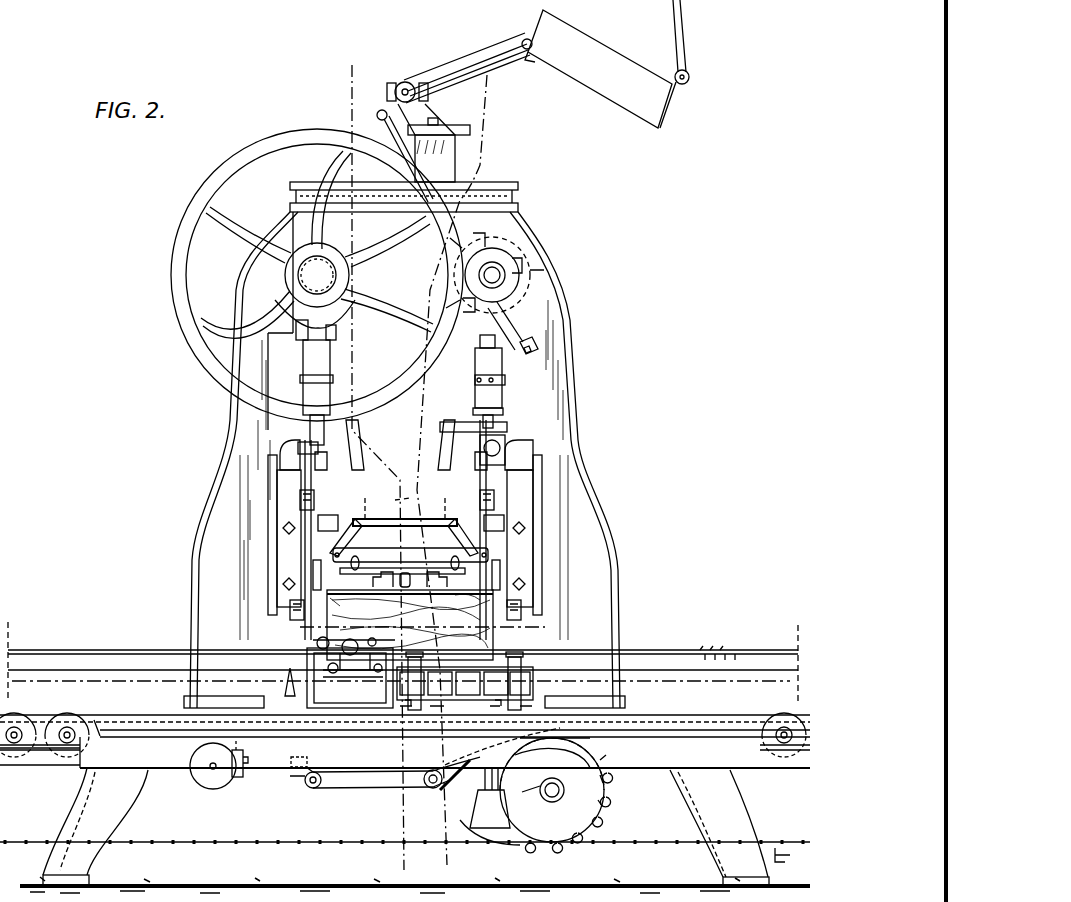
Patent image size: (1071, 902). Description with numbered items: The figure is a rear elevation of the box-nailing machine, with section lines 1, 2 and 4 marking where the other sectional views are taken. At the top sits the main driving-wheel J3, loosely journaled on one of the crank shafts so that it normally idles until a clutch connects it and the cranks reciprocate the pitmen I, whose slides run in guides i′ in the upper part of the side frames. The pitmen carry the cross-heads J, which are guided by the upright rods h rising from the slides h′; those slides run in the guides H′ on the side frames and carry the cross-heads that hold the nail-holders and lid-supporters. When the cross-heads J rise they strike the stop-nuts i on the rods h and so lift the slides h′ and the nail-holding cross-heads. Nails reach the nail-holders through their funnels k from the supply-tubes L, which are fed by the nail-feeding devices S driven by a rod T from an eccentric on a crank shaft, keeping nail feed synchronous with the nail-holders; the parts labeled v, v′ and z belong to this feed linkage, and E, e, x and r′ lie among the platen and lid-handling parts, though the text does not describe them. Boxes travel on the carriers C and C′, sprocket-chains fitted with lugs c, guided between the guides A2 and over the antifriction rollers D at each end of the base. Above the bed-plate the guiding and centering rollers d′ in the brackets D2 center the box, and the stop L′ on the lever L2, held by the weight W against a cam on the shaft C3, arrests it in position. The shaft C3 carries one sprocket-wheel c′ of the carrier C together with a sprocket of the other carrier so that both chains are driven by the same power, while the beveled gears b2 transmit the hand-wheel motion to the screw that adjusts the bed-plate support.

The main driving-wheel J3 is at (250, 160).
The section line 1 1 is at (369, 467).
The section line 2 2 is at (458, 471).
The section line 4 4 is at (404, 679).
The rod T is at (380, 118).
The nail-feeding devices S is at (459, 64).
The lever bar v is at (600, 96).
The connecting link v′ is at (686, 55).
The crank disk z is at (518, 283).
The pitmen I is at (480, 369).
The guides i′ is at (400, 530).
The supply-tubes L is at (358, 440).
The heads or stop-nuts i is at (328, 478).
The guides H′ is at (404, 547).
The upright rods h is at (300, 498).
The slides h′ is at (290, 610).
The cross-heads J is at (330, 526).
The platen E is at (406, 554).
The funnels k is at (404, 537).
The platen center e is at (405, 508).
The rollers x is at (404, 573).
The block r′ is at (410, 625).
The carrying projections or lugs c is at (295, 672).
The guiding and centering rollers d′ is at (503, 684).
The brackets D2 is at (466, 707).
The guides A2 is at (110, 643).
The carrier C is at (646, 822).
The carrier C′ is at (310, 812).
The antifriction rollers D is at (20, 718).
The beveled gears b2 is at (205, 787).
The stop L′ is at (299, 772).
The lever L2 is at (390, 782).
The weight W is at (478, 803).
The shaft C3 is at (552, 800).
The sprocket-wheels c′ is at (600, 818).